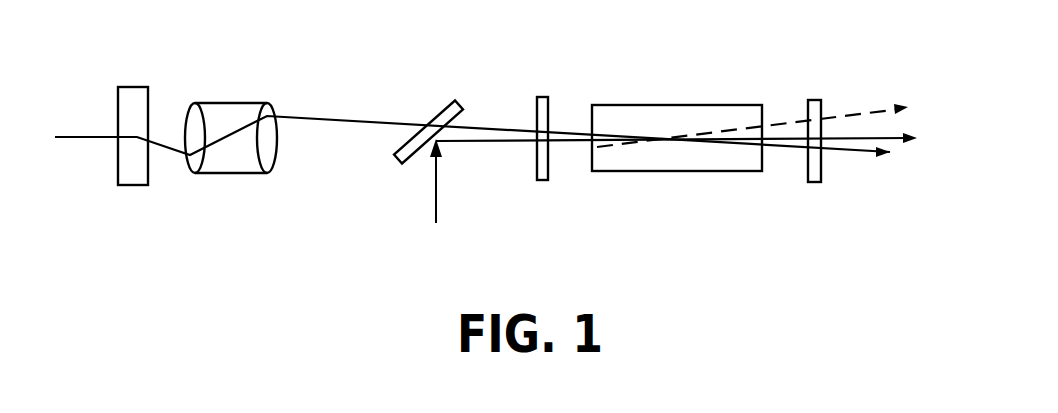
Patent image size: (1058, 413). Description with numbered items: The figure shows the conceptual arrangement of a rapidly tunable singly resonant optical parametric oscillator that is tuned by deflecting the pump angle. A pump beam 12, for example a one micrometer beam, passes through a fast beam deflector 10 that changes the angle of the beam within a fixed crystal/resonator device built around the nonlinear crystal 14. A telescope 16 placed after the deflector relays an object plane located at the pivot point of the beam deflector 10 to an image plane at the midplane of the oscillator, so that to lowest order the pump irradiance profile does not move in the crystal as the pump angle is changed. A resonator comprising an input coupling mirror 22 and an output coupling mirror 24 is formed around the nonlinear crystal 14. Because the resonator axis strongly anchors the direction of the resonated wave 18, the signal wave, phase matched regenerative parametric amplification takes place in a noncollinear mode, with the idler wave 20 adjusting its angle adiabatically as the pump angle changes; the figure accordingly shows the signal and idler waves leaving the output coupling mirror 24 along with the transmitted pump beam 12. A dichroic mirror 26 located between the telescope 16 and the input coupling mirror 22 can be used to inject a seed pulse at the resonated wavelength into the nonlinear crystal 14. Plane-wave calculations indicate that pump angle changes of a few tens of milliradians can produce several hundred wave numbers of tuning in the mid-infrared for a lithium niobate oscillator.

The fast beam deflector 10 is at (132, 187).
The pump beam 12 is at (90, 135).
The nonlinear crystal 14 is at (680, 105).
The telescope 16 is at (243, 104).
The resonated wave 18 is at (880, 138).
The idler wave 20 is at (843, 115).
The input coupling mirror 22 is at (545, 181).
The output coupling mirror 24 is at (820, 183).
The dichroic mirror 26 is at (400, 166).